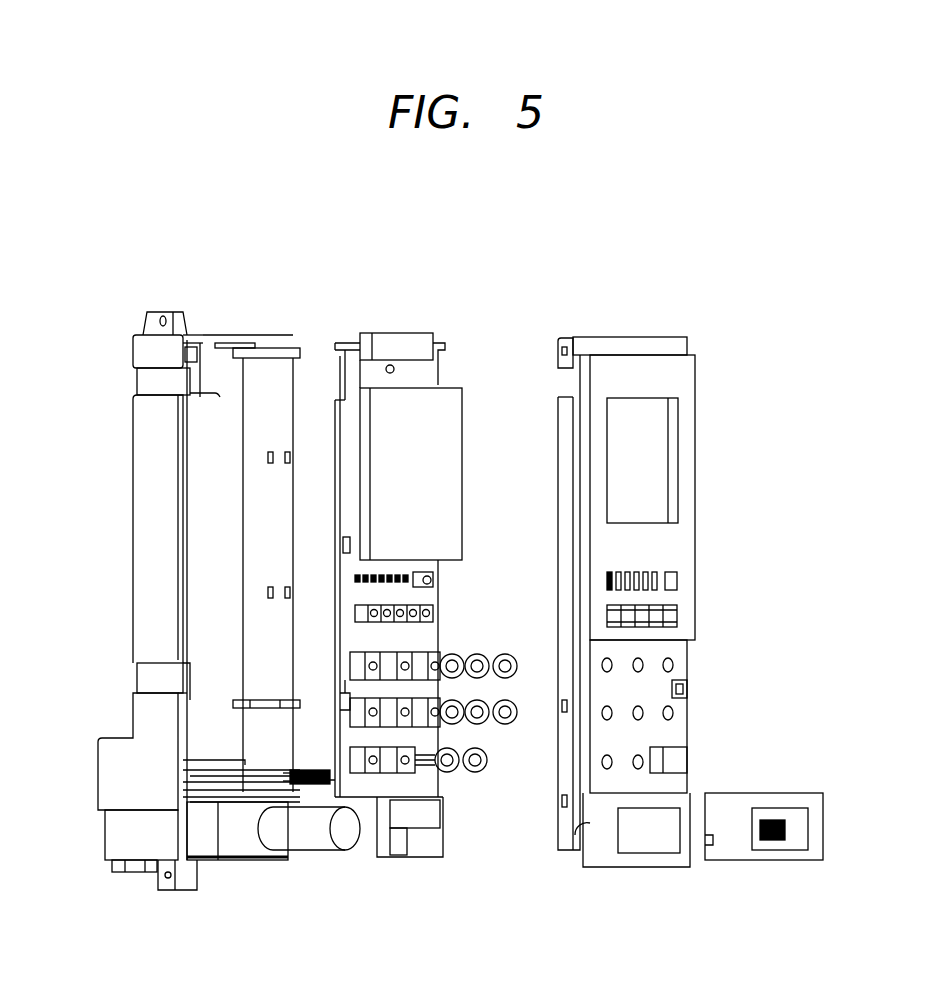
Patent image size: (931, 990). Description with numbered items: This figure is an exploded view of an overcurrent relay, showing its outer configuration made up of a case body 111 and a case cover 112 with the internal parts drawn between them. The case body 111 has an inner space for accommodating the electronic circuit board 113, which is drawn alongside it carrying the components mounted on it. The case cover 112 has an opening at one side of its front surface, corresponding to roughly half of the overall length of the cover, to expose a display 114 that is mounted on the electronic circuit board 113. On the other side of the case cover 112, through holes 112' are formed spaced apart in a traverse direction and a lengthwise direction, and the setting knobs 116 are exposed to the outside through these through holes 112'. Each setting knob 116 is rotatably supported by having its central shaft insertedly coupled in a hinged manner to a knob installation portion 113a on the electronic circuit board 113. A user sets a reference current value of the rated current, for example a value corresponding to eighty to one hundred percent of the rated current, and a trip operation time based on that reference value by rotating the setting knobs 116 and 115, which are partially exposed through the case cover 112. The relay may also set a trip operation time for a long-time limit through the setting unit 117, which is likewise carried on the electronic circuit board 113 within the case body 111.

The case body 111 is at (133, 511).
The case cover 112 is at (690, 602).
The through hole 112' is at (678, 710).
The electronic circuit board 113 is at (442, 577).
The knob installation portion 113a is at (360, 652).
The display 114 is at (462, 462).
The setting knob 115 is at (505, 652).
The setting knobs 116 is at (477, 652).
The setting unit 117 is at (345, 707).